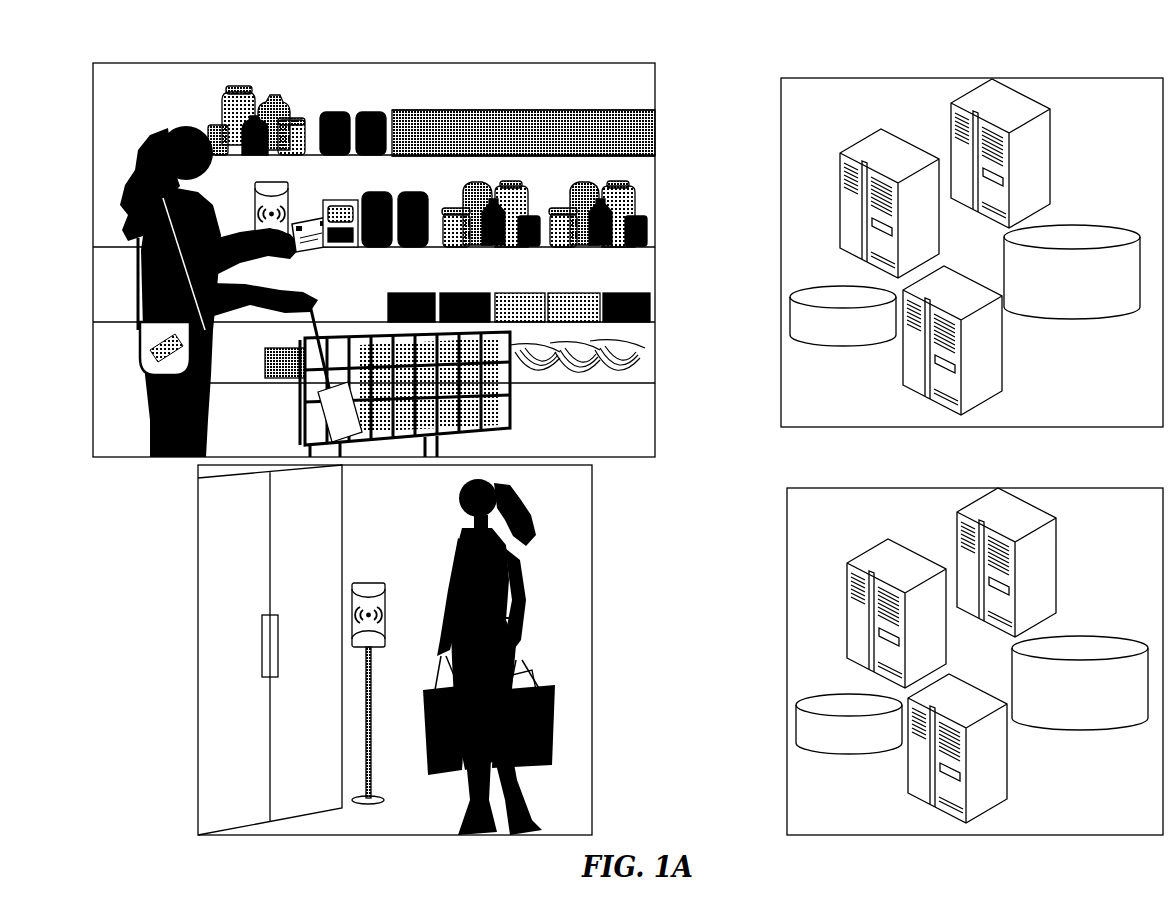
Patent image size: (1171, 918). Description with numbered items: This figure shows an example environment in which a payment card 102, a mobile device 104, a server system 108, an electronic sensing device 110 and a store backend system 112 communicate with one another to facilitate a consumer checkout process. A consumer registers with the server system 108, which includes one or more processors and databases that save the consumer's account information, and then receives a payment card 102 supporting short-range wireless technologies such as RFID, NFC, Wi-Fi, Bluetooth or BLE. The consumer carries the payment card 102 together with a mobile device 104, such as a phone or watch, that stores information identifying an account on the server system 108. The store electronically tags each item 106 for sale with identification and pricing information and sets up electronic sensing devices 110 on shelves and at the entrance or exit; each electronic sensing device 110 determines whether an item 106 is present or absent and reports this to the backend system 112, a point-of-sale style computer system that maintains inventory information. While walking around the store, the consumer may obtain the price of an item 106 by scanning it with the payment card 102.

The payment card 102 is at (316, 252).
The mobile device 104 is at (152, 350).
The item 106 is at (342, 203).
The server system 108 is at (1065, 78).
The electronic sensing device 110 is at (284, 180).
The backend system 112 is at (1070, 488).